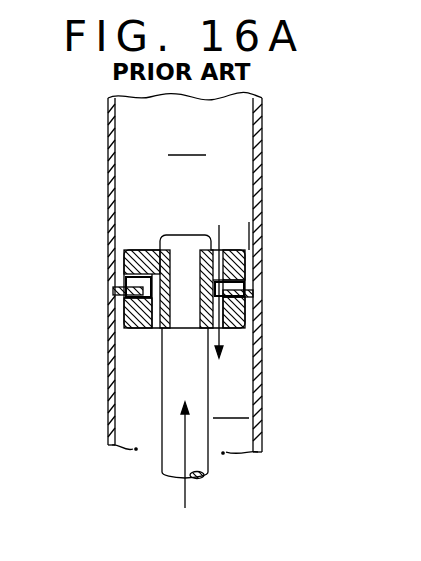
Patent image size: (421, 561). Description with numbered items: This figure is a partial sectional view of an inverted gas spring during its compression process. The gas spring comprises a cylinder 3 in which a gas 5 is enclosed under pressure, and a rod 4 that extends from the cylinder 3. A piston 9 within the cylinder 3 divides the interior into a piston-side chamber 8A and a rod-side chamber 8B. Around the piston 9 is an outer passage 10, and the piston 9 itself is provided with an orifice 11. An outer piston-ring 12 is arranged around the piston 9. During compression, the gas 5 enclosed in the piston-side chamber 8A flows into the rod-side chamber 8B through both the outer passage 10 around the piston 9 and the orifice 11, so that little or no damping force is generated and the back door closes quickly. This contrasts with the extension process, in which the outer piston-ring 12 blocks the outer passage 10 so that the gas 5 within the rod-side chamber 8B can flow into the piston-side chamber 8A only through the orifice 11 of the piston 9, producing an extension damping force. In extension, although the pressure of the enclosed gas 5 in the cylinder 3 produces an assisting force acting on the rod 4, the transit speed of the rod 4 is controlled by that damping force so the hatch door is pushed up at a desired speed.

The cylinder 3 is at (262, 133).
The rod 4 is at (162, 457).
The gas 5 is at (125, 183).
The piston-side chamber 8A is at (187, 142).
The rod-side chamber 8B is at (231, 405).
The piston 9 is at (123, 267).
The outer passage 10 is at (120, 257).
The orifice 11 is at (247, 244).
The outer piston-ring 12 is at (260, 295).